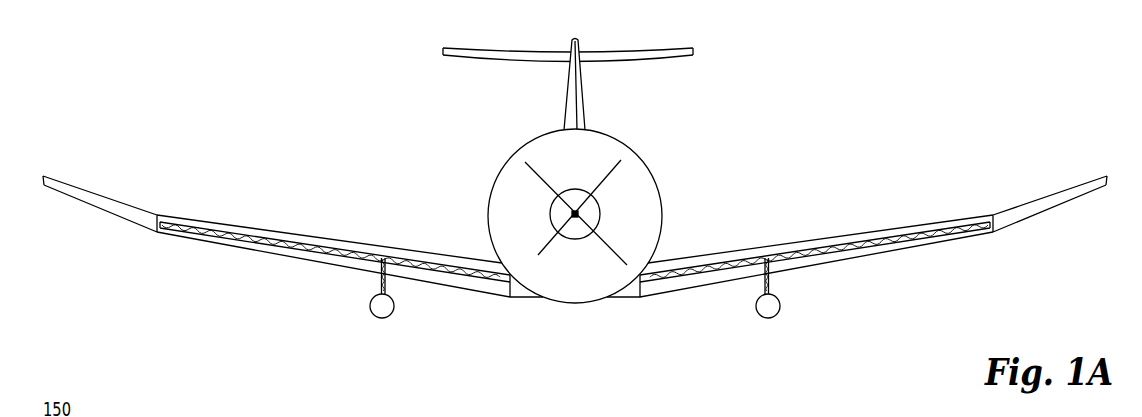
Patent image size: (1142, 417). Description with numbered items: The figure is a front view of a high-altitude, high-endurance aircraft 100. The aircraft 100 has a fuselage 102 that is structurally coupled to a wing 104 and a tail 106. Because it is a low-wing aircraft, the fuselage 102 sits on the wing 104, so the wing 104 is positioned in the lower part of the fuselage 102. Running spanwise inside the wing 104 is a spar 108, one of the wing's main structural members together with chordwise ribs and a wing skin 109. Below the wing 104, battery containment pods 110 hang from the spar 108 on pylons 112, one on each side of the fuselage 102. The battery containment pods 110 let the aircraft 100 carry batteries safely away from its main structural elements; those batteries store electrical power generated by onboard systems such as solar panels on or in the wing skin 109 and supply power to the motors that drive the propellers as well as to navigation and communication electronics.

The aircraft 100 is at (108, 93).
The fuselage 102 is at (652, 177).
The wing 104 is at (308, 237).
The tail 106 is at (438, 47).
The spar 108 is at (278, 247).
The wing skin 109 is at (207, 242).
The battery containment pod 110 is at (396, 304).
The pylon 112 is at (377, 283).